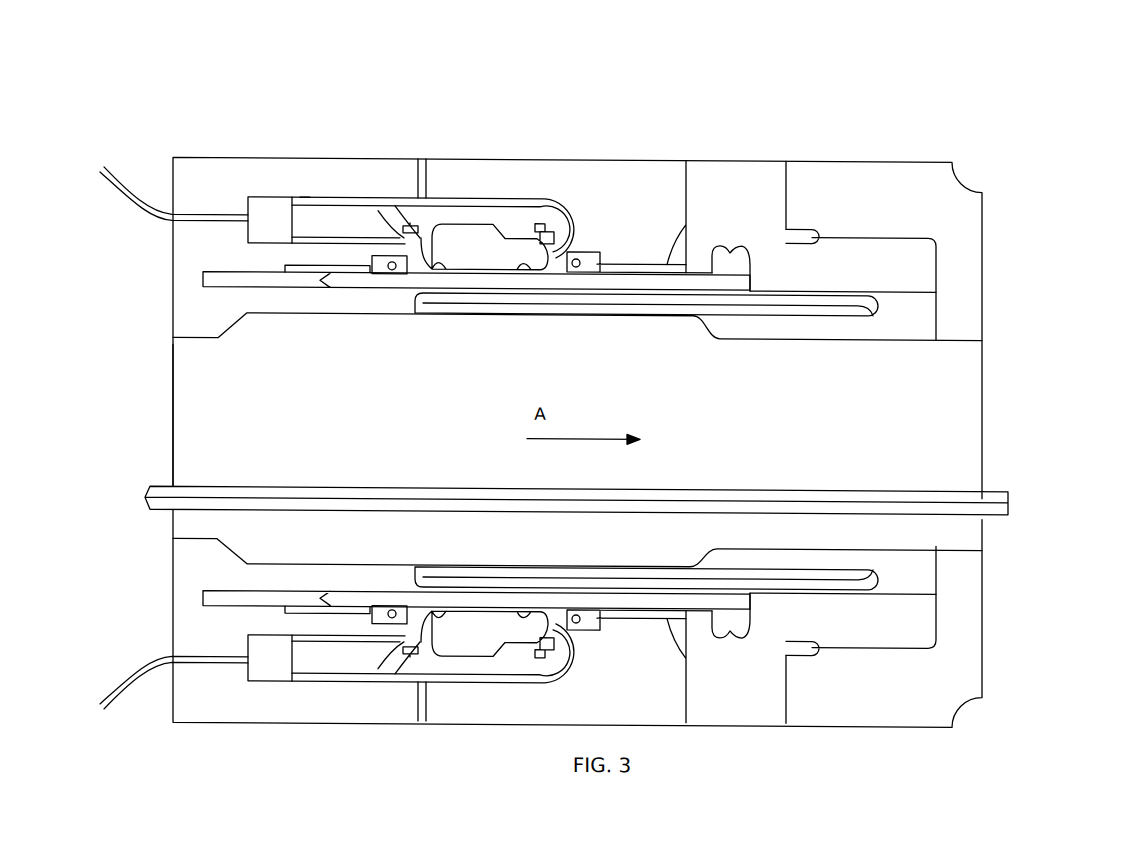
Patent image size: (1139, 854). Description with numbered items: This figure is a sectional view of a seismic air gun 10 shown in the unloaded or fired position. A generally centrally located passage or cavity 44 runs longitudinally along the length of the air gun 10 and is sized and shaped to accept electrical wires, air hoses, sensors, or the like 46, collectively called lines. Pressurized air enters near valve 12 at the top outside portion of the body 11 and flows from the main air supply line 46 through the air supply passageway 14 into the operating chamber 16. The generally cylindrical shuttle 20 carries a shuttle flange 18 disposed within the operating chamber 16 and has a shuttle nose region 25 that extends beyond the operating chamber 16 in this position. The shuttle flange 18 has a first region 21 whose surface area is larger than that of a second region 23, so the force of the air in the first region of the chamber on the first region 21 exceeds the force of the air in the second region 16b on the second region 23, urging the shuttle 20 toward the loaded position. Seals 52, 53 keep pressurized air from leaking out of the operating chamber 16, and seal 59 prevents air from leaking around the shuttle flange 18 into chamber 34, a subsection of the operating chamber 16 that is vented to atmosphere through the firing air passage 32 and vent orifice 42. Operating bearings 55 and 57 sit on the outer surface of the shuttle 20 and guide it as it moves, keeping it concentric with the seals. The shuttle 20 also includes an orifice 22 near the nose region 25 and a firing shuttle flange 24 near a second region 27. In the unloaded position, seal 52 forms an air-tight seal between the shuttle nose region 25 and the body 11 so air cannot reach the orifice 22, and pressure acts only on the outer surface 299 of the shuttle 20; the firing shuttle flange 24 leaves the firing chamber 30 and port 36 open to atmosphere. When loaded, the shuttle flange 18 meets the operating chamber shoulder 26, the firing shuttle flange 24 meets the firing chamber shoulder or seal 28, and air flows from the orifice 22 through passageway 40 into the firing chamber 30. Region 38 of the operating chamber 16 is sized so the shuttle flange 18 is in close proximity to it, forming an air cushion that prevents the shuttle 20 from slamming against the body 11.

The air gun 10 is at (1062, 225).
The body 11 is at (305, 197).
The valve 12 is at (263, 221).
The air supply passageway 14 is at (289, 225).
The operating chamber 16 is at (390, 232).
The second region of the operating chamber 16b is at (491, 258).
The shuttle flange 18 is at (420, 233).
The shuttle 20 is at (203, 273).
The first region of the shuttle flange 21 is at (405, 258).
The orifice 22 is at (308, 285).
The second region of the shuttle flange 23 is at (447, 268).
The firing shuttle flange 24 is at (746, 248).
The shuttle nose region 25 is at (235, 288).
The operating chamber shoulder 26 is at (549, 250).
The second region 27 is at (728, 290).
The firing chamber shoulder and/or seal 28 is at (804, 228).
The firing chamber 30 is at (879, 273).
The firing air passage 32 is at (292, 238).
The chamber 34 is at (580, 252).
The port 36 is at (746, 194).
The region of the operating chamber 38 is at (410, 232).
The passageway 40 is at (702, 315).
The vent orifice 42 is at (428, 175).
The passage/cavity 44 is at (252, 461).
The lines 46 is at (818, 492).
The seal 52 is at (367, 260).
The seal 53 is at (598, 254).
The operating bearing 55 is at (284, 272).
The operating bearing 57 is at (672, 268).
The seal 59 is at (557, 255).
The outer surface 299 is at (537, 270).